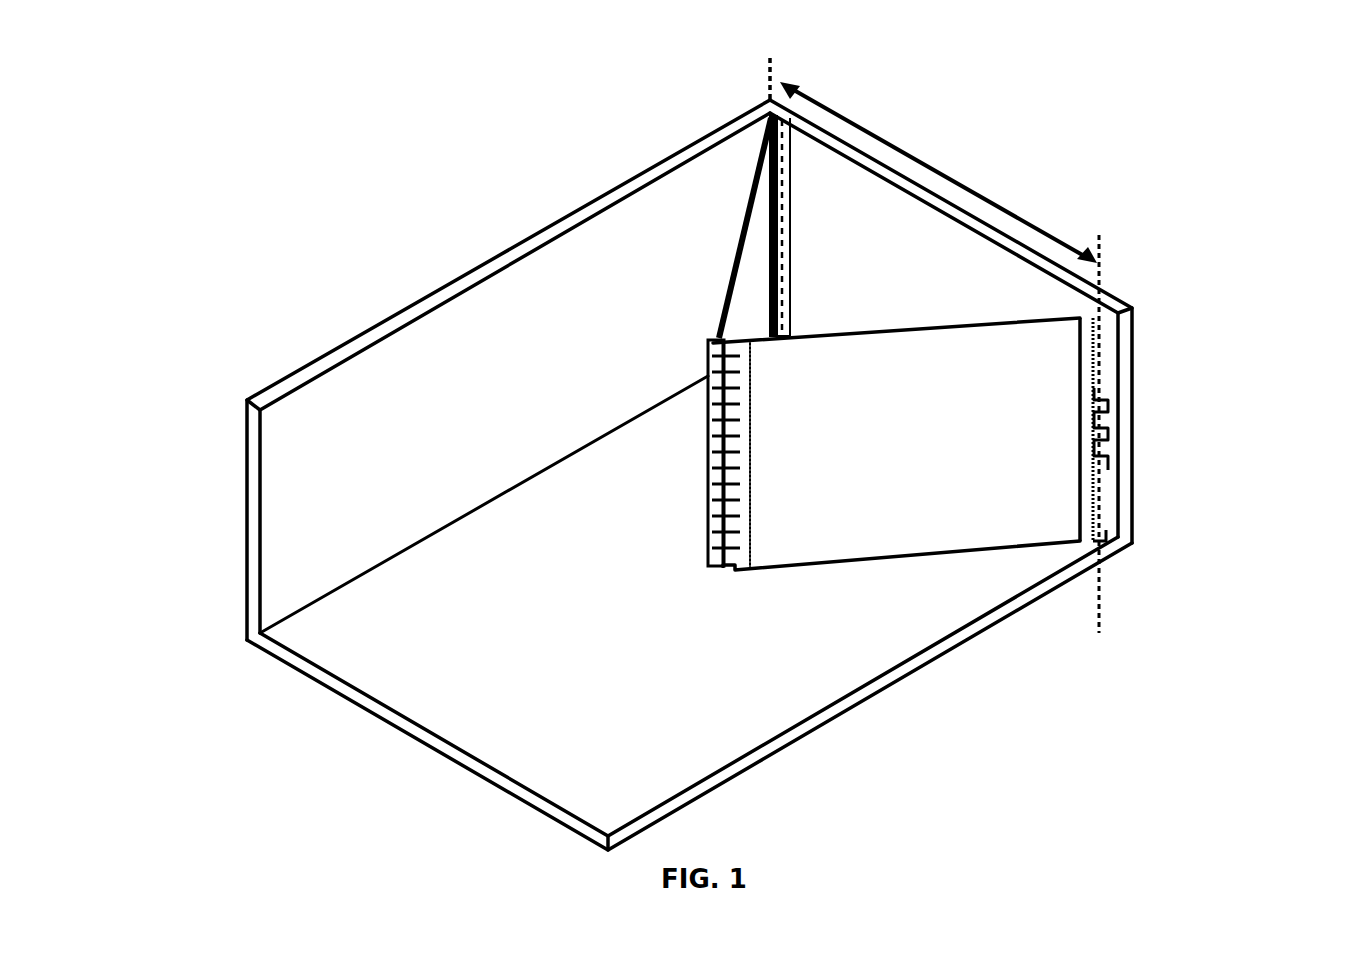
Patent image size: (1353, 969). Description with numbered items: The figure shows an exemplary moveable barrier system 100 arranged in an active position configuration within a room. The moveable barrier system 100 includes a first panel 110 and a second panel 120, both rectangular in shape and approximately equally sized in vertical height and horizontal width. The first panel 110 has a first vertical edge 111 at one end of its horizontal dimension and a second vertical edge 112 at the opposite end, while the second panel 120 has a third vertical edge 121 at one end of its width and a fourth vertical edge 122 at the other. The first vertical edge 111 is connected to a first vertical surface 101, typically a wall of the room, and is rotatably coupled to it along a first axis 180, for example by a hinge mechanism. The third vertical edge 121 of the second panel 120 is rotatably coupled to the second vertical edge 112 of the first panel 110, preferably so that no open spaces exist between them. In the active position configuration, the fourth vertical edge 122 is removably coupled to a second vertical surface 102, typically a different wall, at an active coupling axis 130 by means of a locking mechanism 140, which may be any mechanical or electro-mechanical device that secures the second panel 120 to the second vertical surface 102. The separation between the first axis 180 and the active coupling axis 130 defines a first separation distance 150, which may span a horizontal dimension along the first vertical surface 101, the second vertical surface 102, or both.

The moveable barrier system 100 is at (277, 779).
The first vertical surface 101 is at (370, 448).
The second vertical surface 102 is at (907, 245).
The first panel 110 is at (748, 298).
The first vertical edge 111 is at (768, 215).
The second vertical edge 112 is at (708, 432).
The second panel 120 is at (903, 505).
The third vertical edge 121 is at (745, 517).
The fourth vertical edge 122 is at (1085, 480).
The active coupling axis 130 is at (1103, 255).
The locking mechanism 140 is at (1120, 422).
The first separation distance 150 is at (923, 150).
The first axis 180 is at (758, 82).